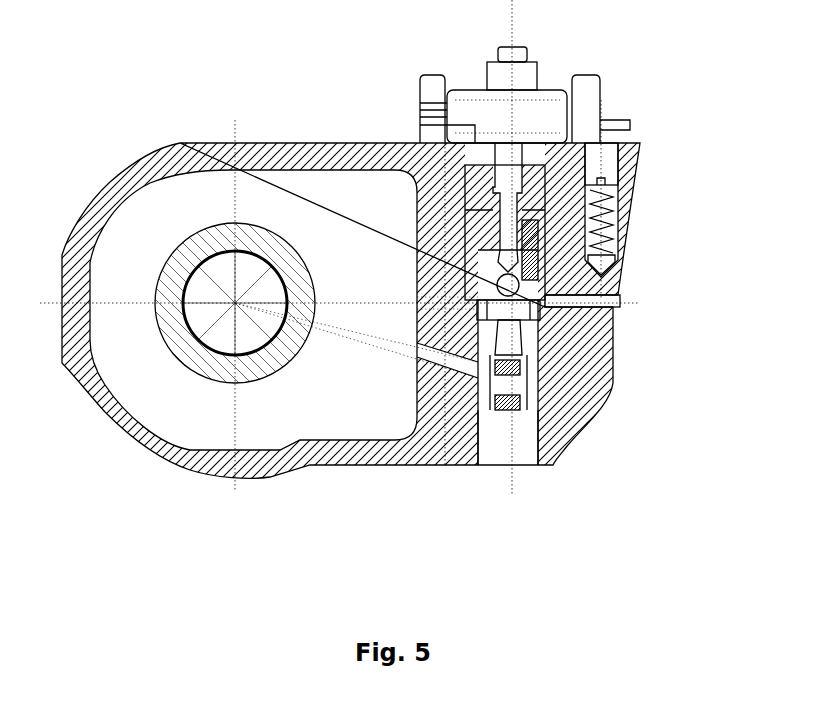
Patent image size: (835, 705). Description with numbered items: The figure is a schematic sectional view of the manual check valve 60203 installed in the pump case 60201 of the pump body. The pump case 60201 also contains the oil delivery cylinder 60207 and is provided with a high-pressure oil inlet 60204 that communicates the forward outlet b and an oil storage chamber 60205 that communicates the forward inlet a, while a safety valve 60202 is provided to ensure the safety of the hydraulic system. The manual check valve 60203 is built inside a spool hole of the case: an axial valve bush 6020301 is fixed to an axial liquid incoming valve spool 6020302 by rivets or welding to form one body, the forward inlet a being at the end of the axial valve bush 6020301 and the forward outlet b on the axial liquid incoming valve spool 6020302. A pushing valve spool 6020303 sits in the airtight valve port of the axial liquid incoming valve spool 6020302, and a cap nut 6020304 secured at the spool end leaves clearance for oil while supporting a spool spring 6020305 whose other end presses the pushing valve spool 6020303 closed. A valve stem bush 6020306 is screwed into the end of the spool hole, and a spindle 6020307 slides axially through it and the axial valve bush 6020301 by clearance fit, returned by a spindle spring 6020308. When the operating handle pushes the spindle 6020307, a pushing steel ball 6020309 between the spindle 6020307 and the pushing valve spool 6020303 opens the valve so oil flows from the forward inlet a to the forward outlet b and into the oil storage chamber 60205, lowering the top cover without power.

The pump case 60201 is at (283, 147).
The safety valve 60202 is at (602, 153).
The manual check valve 60203 is at (478, 303).
The high-pressure oil inlet 60204 is at (498, 452).
The oil storage chamber 60205 is at (165, 210).
The oil delivery cylinder 60207 is at (235, 303).
The axial valve bush 6020301 is at (487, 262).
The axial liquid incoming valve spool 6020302 is at (548, 328).
The pushing valve spool 6020303 is at (522, 352).
The cap nut 6020304 is at (522, 408).
The spool spring 6020305 is at (527, 378).
The valve stem bush 6020306 is at (477, 167).
The spindle 6020307 is at (515, 160).
The spindle spring 6020308 is at (540, 245).
The pushing steel ball 6020309 is at (548, 298).
The forward inlet a is at (492, 290).
The forward outlet b is at (473, 378).